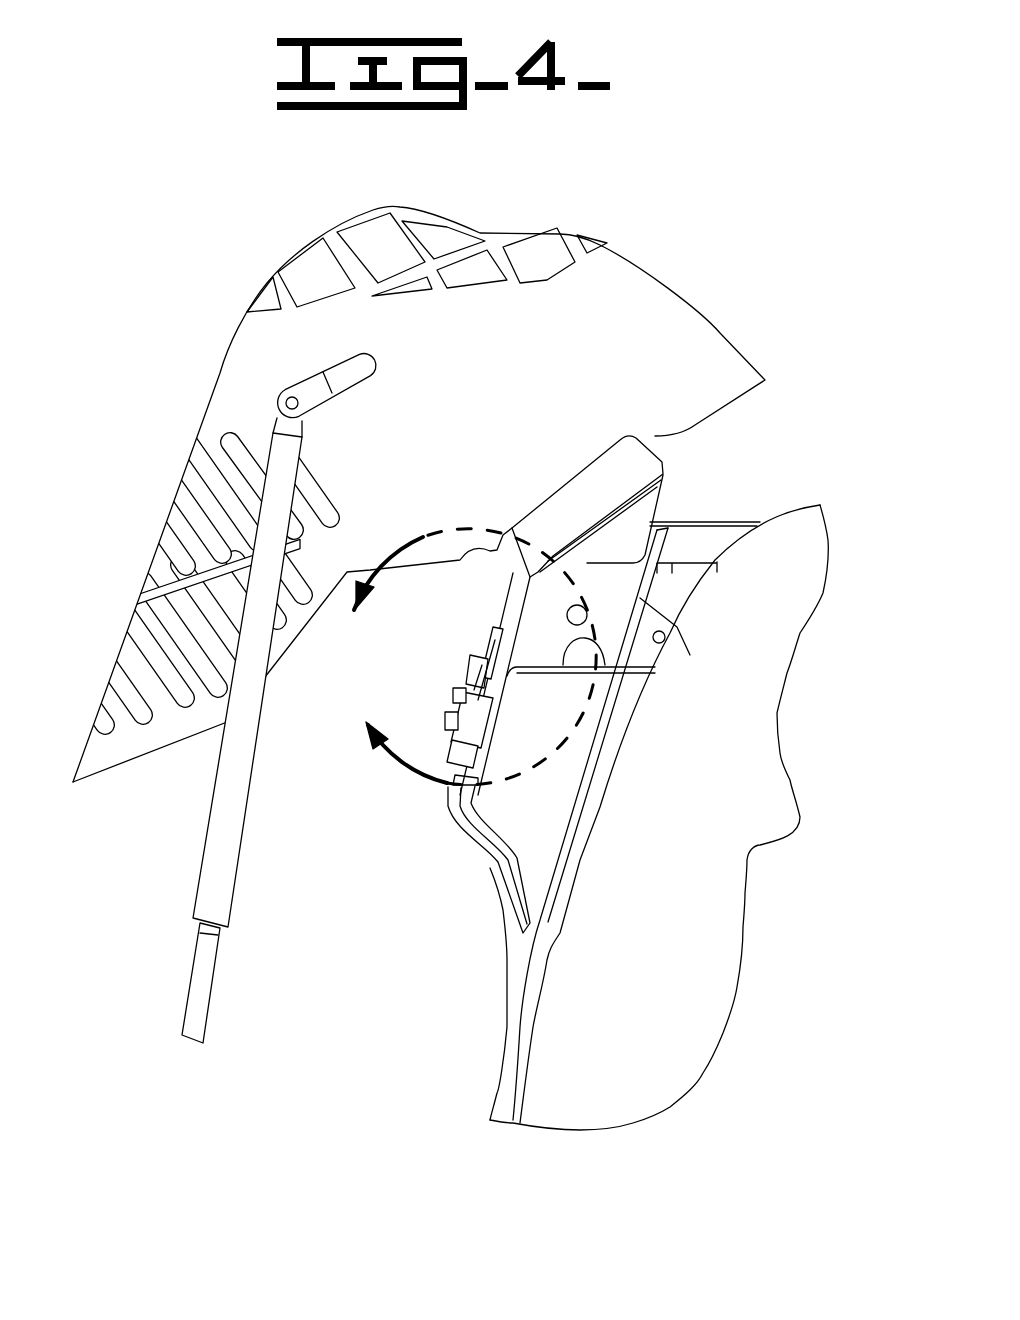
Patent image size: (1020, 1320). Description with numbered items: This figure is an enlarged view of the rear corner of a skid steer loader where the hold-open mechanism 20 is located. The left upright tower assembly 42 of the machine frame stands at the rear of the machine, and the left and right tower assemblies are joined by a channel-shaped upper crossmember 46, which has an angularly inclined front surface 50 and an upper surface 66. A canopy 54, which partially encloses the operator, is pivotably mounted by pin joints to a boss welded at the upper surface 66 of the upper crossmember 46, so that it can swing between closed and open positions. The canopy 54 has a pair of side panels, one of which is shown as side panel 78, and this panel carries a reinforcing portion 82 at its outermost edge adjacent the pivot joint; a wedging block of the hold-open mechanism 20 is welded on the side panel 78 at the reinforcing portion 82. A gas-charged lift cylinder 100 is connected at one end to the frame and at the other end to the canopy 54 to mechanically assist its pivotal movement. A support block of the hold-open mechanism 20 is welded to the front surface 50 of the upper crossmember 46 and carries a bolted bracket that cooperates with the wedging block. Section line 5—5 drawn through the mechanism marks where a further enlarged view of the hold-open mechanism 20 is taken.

The hold-open mechanism 20 is at (417, 690).
The left tower assembly 42 is at (702, 887).
The upper crossmember 46 is at (490, 868).
The front surface 50 is at (447, 788).
The canopy 54 is at (690, 300).
The upper surface 66 is at (605, 648).
The side panel 78 is at (545, 395).
The reinforcing portion 82 is at (680, 433).
The gas-charged lift cylinder 100 is at (213, 803).
The section line 5— 5 is at (468, 657).